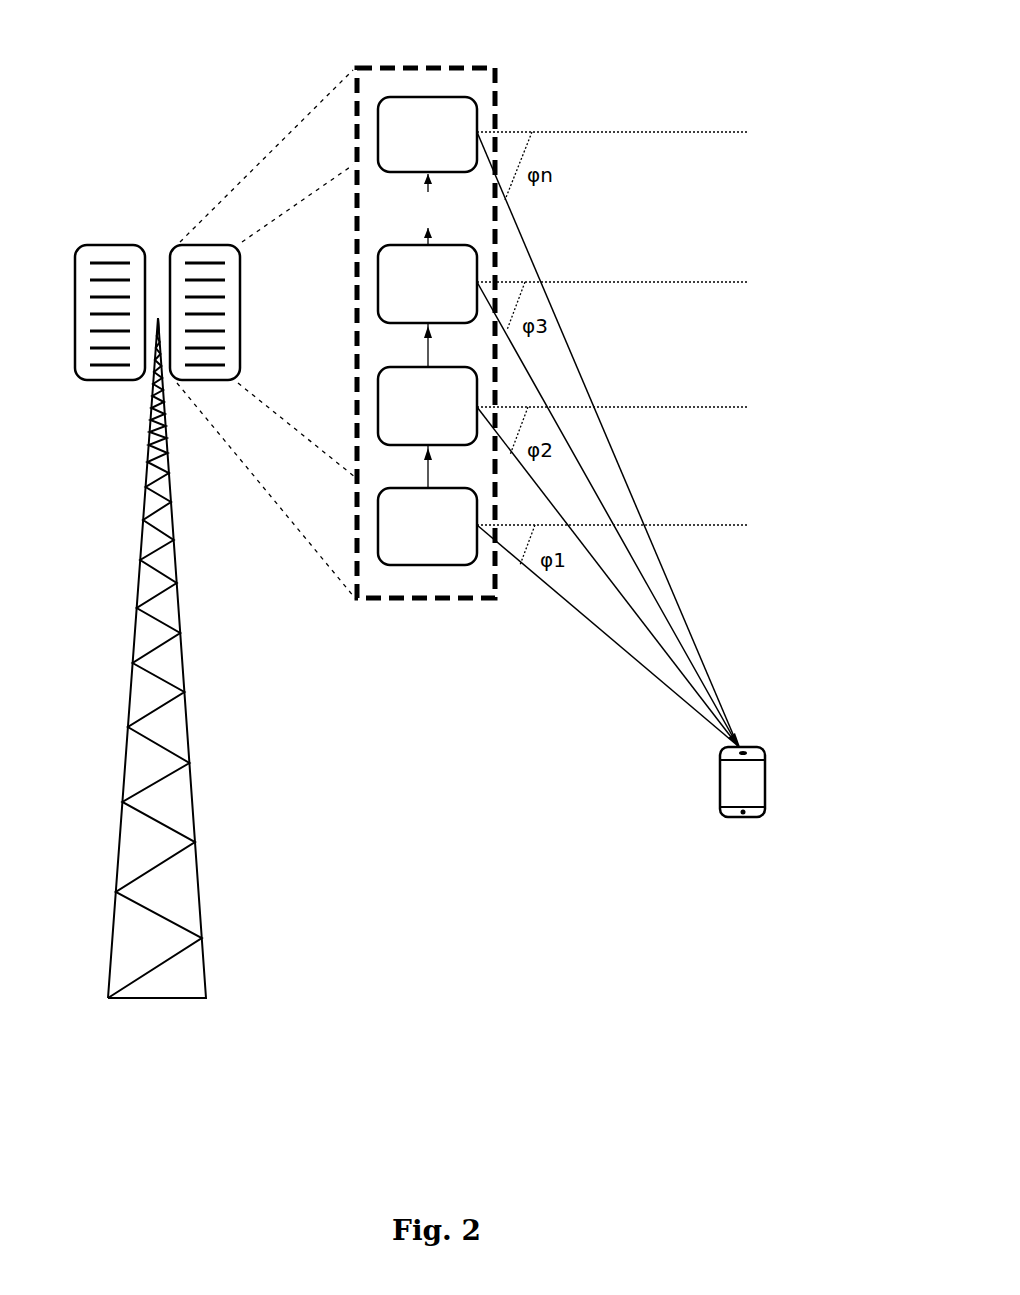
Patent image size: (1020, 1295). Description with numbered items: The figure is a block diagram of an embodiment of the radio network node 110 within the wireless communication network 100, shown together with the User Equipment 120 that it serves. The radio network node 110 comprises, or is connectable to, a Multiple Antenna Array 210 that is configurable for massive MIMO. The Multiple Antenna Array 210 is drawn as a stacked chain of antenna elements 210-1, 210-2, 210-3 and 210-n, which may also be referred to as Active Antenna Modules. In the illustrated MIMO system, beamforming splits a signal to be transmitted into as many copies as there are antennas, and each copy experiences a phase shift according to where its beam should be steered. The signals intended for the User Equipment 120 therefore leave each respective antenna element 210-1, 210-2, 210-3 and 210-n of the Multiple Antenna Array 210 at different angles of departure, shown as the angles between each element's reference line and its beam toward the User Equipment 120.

The wireless communication network 100 is at (682, 67).
The radio network node 110 is at (215, 592).
The User Equipment (UE) 120 is at (746, 807).
The Multiple Antenna Array 210 is at (426, 392).
The antenna element 210-n is at (427, 134).
The antenna element 210-3 is at (427, 284).
The antenna element 210-2 is at (427, 406).
The antenna element 210-1 is at (427, 526).